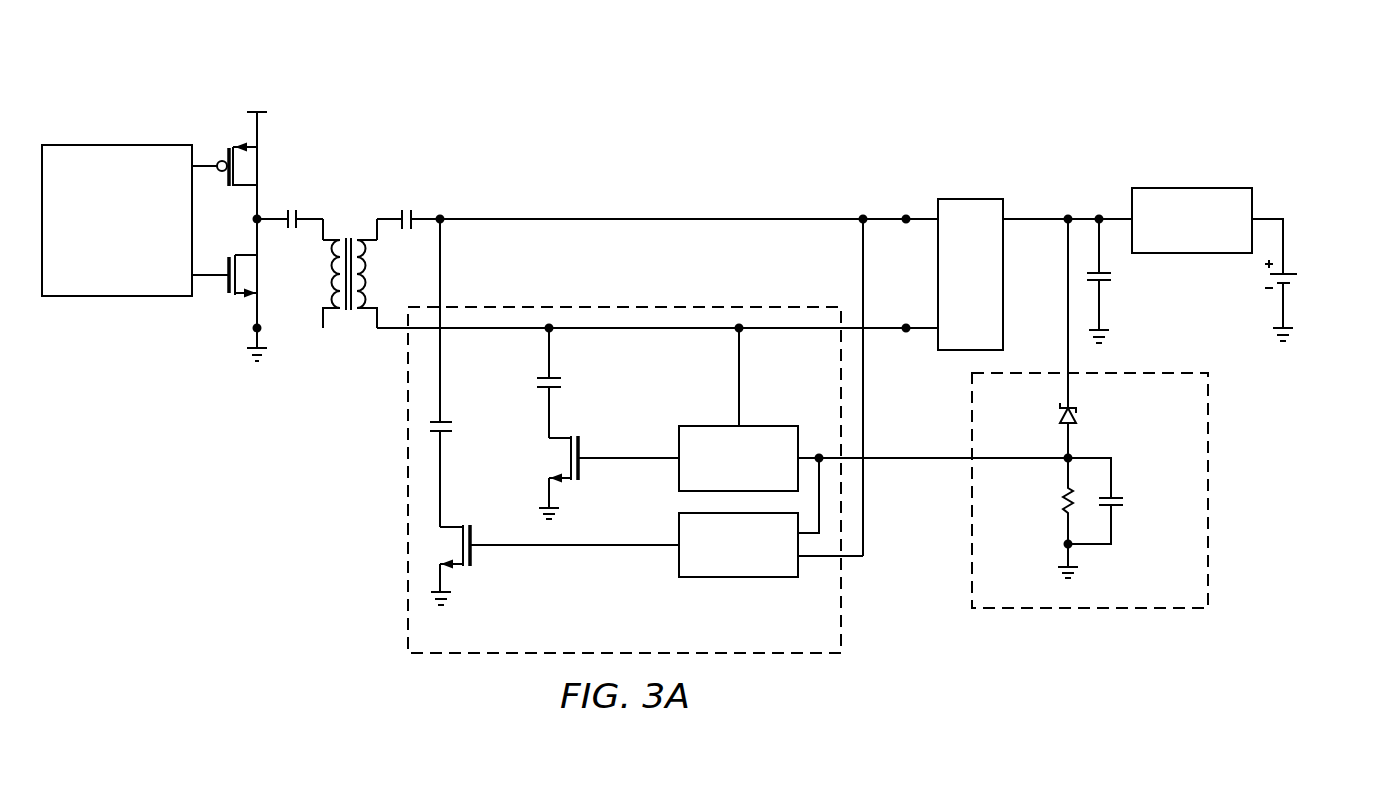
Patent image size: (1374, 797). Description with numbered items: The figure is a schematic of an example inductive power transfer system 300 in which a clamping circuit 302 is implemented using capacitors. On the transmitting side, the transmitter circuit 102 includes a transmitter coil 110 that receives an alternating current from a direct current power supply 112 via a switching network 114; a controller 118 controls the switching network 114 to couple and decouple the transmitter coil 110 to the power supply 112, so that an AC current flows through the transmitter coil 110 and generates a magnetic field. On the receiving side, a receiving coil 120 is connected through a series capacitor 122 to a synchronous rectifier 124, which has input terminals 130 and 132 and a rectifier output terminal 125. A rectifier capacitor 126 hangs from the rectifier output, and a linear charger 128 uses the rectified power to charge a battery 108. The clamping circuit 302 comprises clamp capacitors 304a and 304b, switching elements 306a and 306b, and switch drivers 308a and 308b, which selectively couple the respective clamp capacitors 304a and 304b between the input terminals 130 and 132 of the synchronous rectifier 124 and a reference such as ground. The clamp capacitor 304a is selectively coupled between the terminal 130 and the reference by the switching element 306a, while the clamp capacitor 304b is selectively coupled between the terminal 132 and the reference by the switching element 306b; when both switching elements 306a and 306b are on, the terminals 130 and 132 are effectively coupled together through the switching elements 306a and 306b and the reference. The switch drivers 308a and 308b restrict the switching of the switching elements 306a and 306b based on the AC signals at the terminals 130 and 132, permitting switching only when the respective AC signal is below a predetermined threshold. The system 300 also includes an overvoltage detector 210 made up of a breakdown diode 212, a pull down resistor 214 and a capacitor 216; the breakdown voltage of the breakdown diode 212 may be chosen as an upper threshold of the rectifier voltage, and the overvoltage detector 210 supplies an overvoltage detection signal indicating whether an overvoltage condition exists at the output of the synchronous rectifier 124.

The inductive power transfer system 300 is at (1089, 67).
The transmitter circuit 102 is at (369, 116).
The battery 108 is at (1300, 278).
The transmitter coil 110 is at (350, 278).
The direct current (DC) power supply 112 is at (251, 111).
The switching network 114 is at (300, 165).
The controller 118 is at (117, 145).
The receiving coil 120 is at (363, 311).
The series capacitor 122 is at (407, 206).
The synchronous rectifier 124 is at (970, 199).
The rectifier output terminal 125 is at (1035, 217).
The rectifier capacitor 126 is at (1112, 274).
The linear charger 128 is at (1193, 188).
The terminal 130 is at (906, 212).
The terminal 132 is at (906, 335).
The overvoltage detector 210 is at (1102, 618).
The breakdown diode 212 is at (1061, 410).
The pull down resistor 214 is at (1060, 496).
The capacitor 216 is at (1125, 500).
The clamping circuit 302 is at (398, 490).
The clamp capacitor 304a is at (565, 383).
The clamp capacitor 304b is at (453, 425).
The switching element 306a is at (581, 440).
The switching element 306b is at (472, 558).
The switch driver 308a is at (765, 426).
The switch driver 308b is at (745, 578).